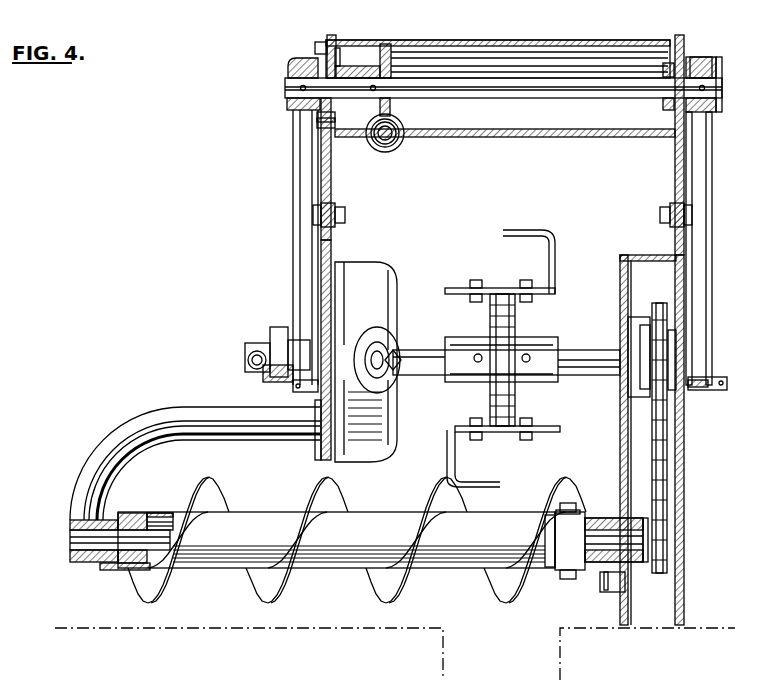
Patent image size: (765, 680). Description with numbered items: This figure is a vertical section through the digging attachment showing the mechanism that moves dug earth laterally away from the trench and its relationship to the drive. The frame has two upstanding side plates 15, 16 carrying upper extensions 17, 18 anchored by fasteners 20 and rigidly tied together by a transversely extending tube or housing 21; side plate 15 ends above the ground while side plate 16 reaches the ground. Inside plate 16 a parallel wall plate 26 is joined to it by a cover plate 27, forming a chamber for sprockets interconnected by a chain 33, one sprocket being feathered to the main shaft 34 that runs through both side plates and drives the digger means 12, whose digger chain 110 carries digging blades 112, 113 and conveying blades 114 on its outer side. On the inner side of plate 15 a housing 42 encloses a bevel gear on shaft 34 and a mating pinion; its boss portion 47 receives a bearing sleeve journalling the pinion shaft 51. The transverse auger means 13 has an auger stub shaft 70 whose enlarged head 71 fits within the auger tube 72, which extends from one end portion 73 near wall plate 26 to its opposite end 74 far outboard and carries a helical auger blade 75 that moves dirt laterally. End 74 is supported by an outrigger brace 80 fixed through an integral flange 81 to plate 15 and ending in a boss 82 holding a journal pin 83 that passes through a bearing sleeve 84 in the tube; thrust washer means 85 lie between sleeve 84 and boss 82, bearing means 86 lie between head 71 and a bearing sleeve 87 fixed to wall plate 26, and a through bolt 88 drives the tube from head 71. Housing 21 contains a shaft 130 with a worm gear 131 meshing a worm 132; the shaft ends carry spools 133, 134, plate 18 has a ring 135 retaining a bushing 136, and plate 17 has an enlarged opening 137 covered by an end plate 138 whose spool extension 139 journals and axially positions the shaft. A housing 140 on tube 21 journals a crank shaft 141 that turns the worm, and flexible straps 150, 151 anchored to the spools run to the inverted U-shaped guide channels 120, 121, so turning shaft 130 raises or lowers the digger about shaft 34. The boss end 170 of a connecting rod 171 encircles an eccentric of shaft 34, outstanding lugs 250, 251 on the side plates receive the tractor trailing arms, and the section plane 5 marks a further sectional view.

The section line 5 is at (386, 27).
The digger means 12 is at (492, 353).
The transverse auger means 13 is at (352, 549).
The side plate 15 is at (331, 250).
The side plate 16 is at (675, 245).
The upper extension 17 is at (331, 190).
The upper extension 18 is at (675, 178).
The fasteners 20 is at (345, 215).
The transversely extending tube or housing 21 is at (490, 138).
The wall plate 26 is at (620, 440).
The cover plate 27 is at (652, 262).
The chain 33 is at (686, 444).
The shaft 34 is at (580, 348).
The housing 42 is at (383, 278).
The boss portion 47 is at (362, 330).
The pinion shaft 51 is at (397, 350).
The auger stub shaft 70 is at (606, 532).
The enlarged head portion 71 is at (562, 578).
The auger tube or shaft 72 is at (466, 566).
The end portion 73 is at (625, 580).
The opposite end 74 is at (120, 520).
The auger blade 75 is at (380, 595).
The outrigger brace 80 is at (172, 407).
The integral flange 81 is at (318, 443).
The boss portion 82 is at (80, 562).
The journal pin 83 is at (70, 540).
The bearing sleeve 84 is at (145, 520).
The thrust washer means 85 is at (118, 570).
The bearing means 86 is at (600, 580).
The bearing sleeve 87 is at (632, 518).
The through bolt 88 is at (566, 503).
The jack column 110 is at (515, 320).
The blades 112 is at (447, 455).
The blades 113 is at (553, 244).
The blades 114 is at (555, 380).
The guide channel 120 is at (292, 188).
The guide channel 121 is at (712, 214).
The shaft 130 is at (503, 74).
The worm gear 131 is at (386, 70).
The worm 132 is at (401, 123).
The pulley or spool 133 is at (287, 75).
The pulley or spool 134 is at (719, 60).
The ring 135 is at (668, 66).
The bearing or bushing 136 is at (688, 58).
The enlarged opening 137 is at (317, 119).
The end plate 138 is at (320, 46).
The spool or bearing sleeve extension 139 is at (352, 70).
The housing 140 is at (402, 143).
The crank shaft 141 is at (372, 146).
The flexible strap or band 150 is at (298, 62).
The flexible strap or band 151 is at (701, 57).
The boss end 170 is at (262, 343).
The connecting rod 171 is at (247, 358).
The outstanding lug 250 is at (298, 394).
The outstanding lug 251 is at (712, 390).